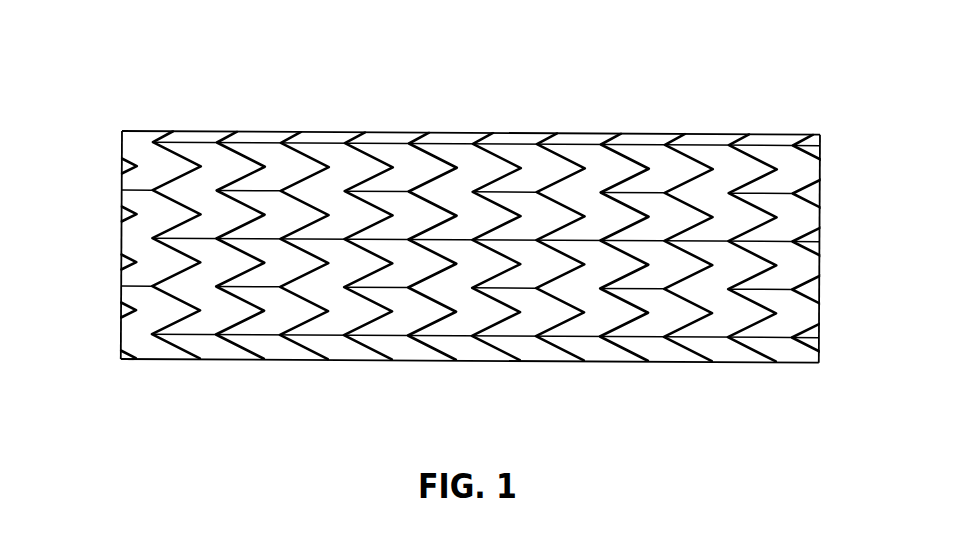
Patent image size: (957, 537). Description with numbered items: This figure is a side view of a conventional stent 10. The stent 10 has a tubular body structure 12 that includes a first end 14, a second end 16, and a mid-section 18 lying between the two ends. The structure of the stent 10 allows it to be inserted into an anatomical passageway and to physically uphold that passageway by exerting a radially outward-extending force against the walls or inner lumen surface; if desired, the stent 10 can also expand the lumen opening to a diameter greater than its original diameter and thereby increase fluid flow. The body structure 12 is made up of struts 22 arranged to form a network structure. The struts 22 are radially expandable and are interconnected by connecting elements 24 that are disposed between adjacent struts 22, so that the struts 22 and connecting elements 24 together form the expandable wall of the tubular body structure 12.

The stent 10 is at (366, 48).
The tubular body structure 12 is at (122, 128).
The first end 14 is at (826, 129).
The second end 16 is at (118, 128).
The mid-section 18 is at (462, 364).
The struts 22 is at (173, 343).
The connecting elements 24 is at (470, 337).